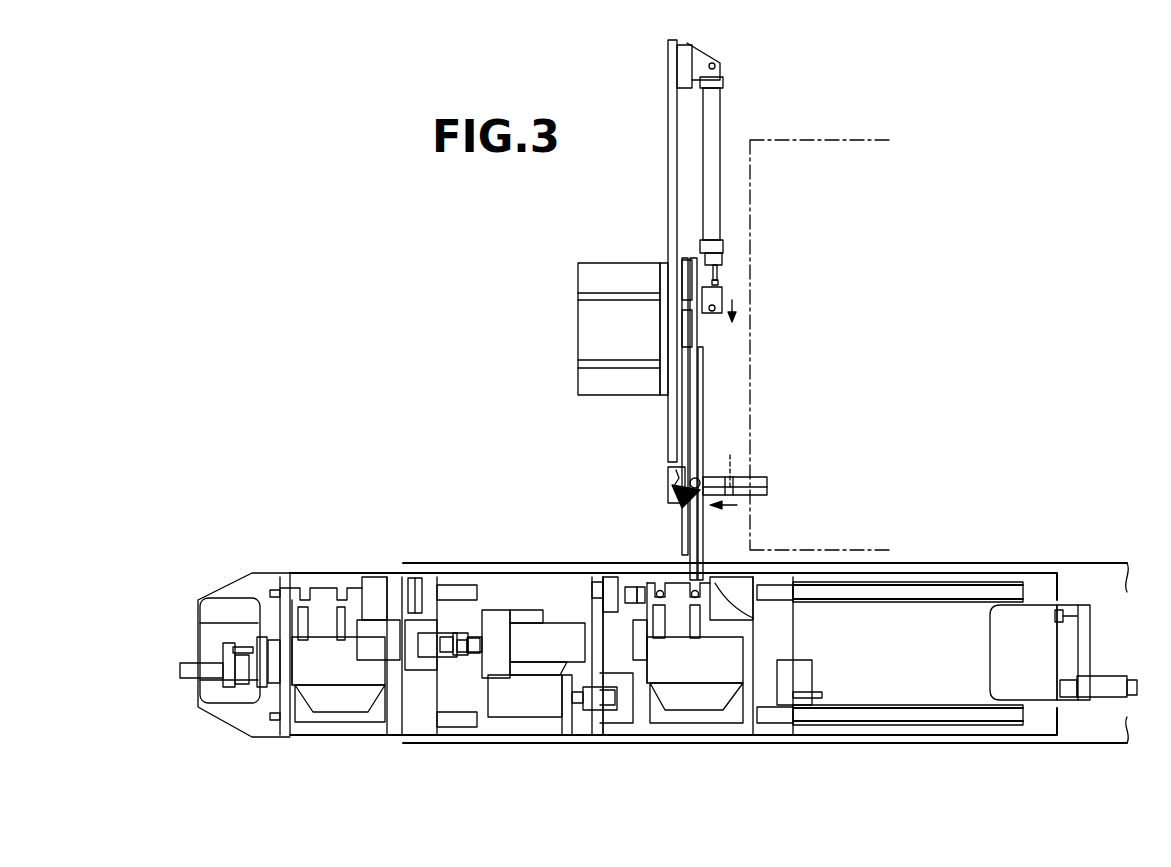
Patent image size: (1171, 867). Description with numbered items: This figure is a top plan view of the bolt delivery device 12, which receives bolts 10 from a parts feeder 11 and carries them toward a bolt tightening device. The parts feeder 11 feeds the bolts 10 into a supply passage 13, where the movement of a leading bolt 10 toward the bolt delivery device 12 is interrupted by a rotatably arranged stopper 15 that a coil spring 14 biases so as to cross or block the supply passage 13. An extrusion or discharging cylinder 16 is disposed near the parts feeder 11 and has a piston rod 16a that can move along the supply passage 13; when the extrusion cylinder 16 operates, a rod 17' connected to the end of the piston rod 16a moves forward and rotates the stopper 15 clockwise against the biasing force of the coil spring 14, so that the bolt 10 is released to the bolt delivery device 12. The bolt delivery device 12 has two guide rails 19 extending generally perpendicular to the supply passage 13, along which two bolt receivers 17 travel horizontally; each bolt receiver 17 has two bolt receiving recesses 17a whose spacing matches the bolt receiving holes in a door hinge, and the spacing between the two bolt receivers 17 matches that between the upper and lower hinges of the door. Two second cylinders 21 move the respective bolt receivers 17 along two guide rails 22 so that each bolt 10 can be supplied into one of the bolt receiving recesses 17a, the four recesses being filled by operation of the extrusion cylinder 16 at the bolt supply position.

The bolt 10 is at (700, 472).
The parts feeder 11 is at (880, 140).
The bolt delivery device 12 is at (490, 748).
The supply passage 13 is at (705, 410).
The coil spring 14 is at (666, 490).
The stopper 15 is at (672, 502).
The extrusion cylinder 16 is at (725, 110).
The piston rod 16a is at (720, 275).
The bolt receiver 17 is at (516, 681).
The vertical guide rail 17' is at (752, 419).
The bolt receiving recess 17a is at (305, 587).
The guide rail 19 is at (935, 590).
The second cylinder 21 is at (525, 630).
The guide rail 22 is at (455, 590).